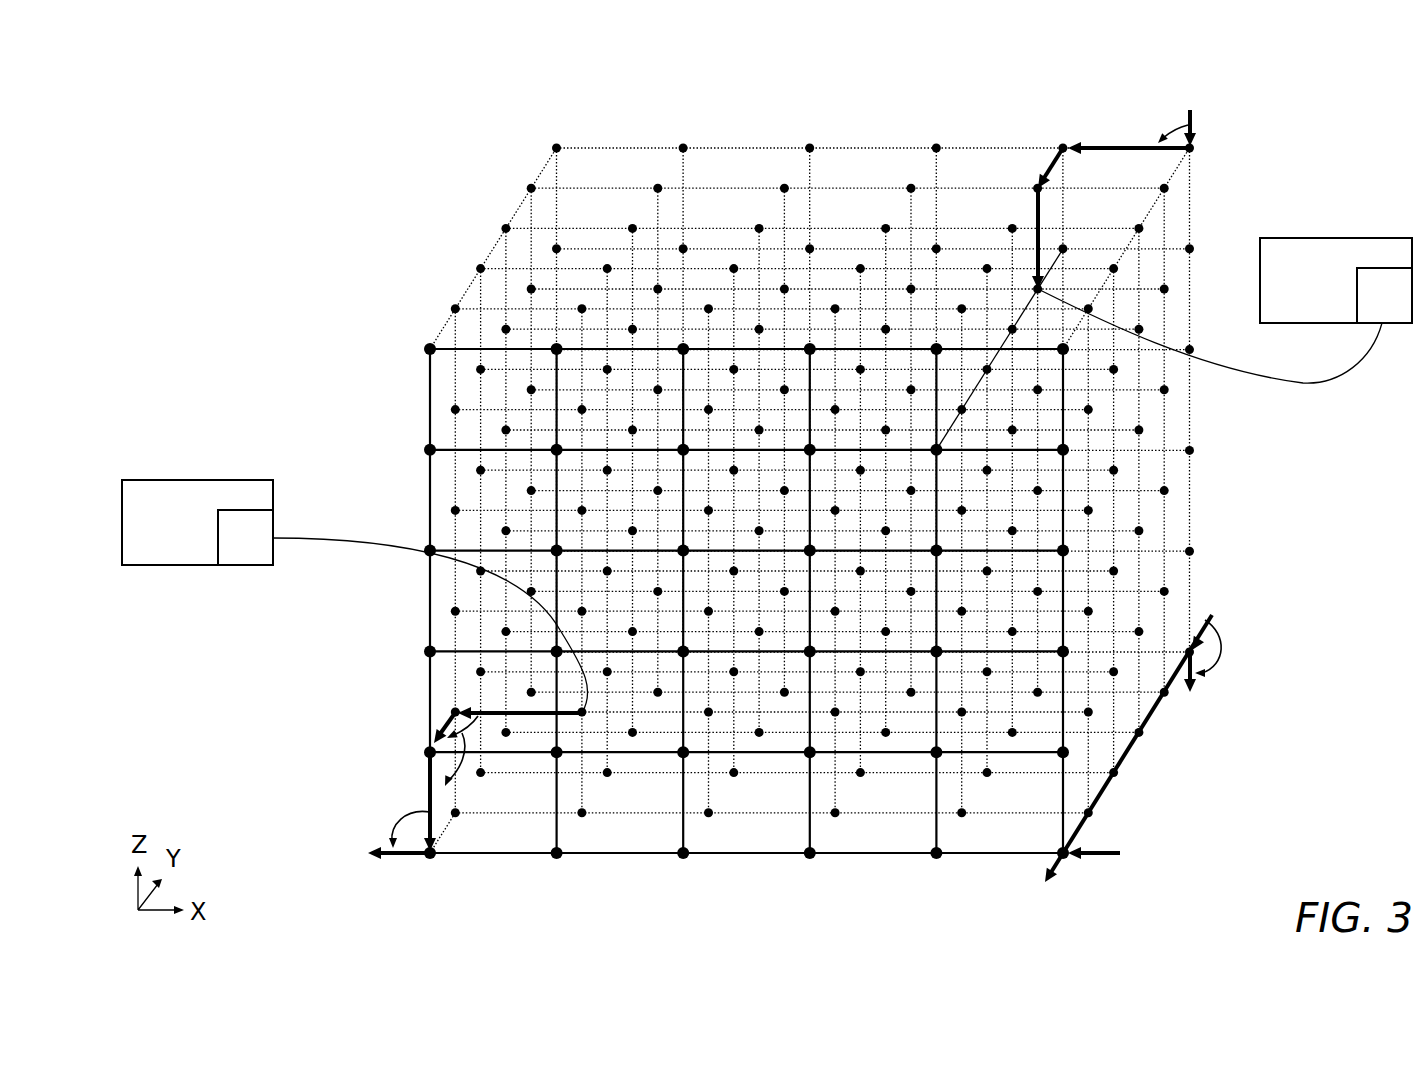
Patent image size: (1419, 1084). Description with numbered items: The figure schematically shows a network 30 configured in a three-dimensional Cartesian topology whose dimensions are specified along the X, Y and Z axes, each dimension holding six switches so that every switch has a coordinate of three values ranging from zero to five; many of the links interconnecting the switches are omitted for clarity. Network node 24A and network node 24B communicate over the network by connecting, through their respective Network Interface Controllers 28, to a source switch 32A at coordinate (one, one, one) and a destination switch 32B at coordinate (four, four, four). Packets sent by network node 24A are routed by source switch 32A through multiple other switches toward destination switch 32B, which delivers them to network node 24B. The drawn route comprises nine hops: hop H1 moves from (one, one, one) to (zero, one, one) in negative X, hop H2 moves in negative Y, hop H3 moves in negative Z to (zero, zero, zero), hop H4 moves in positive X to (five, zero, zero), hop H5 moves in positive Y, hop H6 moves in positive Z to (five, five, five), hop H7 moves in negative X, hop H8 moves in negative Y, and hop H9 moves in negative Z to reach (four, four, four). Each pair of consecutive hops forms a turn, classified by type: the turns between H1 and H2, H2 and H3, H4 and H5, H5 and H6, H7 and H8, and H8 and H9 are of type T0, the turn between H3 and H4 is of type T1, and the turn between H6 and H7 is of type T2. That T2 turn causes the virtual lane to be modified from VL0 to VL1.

The network 30 is at (346, 120).
The network node 24A is at (200, 480).
The network node 24B is at (1337, 238).
The Network Interface Controller (NIC) 28 is at (242, 566).
The source switch 32A is at (582, 713).
The destination switch 32B is at (1040, 290).
The hop H1 is at (480, 690).
The hop H2 is at (432, 718).
The hop H3 is at (428, 790).
The hop H4 is at (416, 858).
The hop H5 is at (1212, 612).
The hop H6 is at (1222, 665).
The hop H7 is at (1115, 146).
The hop H8 is at (1040, 160).
The hop H9 is at (1032, 205).
The turn type T0 is at (846, 714).
The turn type T1 is at (397, 825).
The turn type T2 is at (1168, 121).
The virtual lane VL0 is at (520, 700).
The virtual lane VL1 is at (1129, 162).